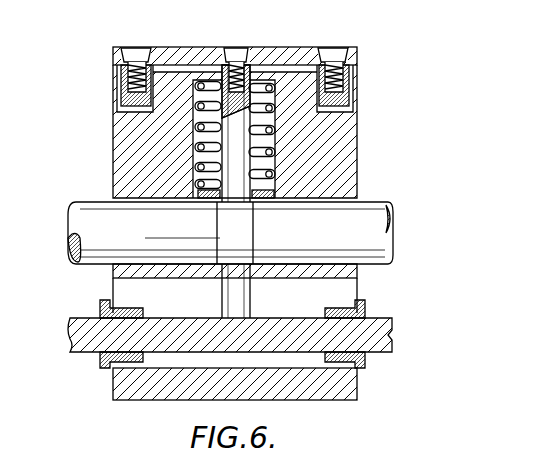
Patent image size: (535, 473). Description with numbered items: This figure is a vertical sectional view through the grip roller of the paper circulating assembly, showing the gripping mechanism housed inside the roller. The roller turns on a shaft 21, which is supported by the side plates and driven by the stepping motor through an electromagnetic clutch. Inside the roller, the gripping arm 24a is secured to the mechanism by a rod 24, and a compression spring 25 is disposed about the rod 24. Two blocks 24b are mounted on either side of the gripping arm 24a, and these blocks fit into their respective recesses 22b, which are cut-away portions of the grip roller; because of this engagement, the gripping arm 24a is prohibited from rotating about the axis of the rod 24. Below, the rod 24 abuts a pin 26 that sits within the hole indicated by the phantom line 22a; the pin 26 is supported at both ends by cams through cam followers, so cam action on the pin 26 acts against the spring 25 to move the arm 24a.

The shaft 21 is at (375, 228).
The phantom line 22a is at (347, 298).
The recesses 22b is at (114, 101).
The rod 24 is at (208, 158).
The gripping arm 24a is at (296, 52).
The blocks 24b is at (116, 66).
The compression spring 25 is at (273, 157).
The pin 26 is at (393, 336).